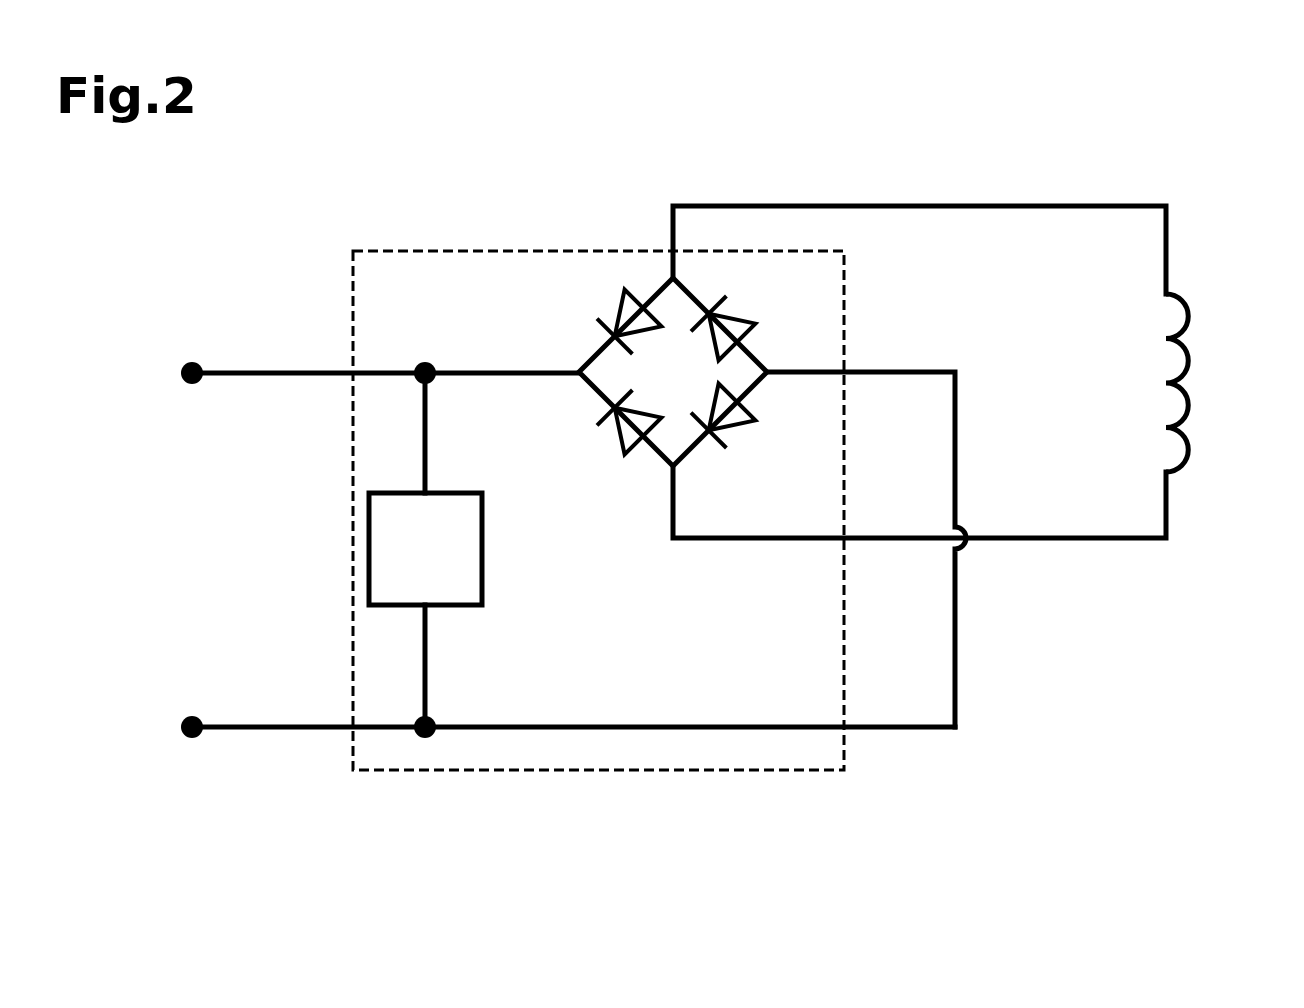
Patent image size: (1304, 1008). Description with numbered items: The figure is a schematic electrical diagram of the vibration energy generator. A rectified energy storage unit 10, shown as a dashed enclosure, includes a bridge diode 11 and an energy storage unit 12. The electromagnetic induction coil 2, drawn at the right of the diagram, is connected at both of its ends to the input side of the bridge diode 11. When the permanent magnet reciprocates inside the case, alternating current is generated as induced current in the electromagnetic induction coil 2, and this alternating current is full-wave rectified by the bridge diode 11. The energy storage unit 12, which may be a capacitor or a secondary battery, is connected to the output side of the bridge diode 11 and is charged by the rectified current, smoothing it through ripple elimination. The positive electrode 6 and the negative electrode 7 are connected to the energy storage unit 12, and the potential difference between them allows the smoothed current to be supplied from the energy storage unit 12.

The electromagnetic induction coil 2 is at (1212, 369).
The positive electrode 6 is at (192, 360).
The negative electrode 7 is at (192, 714).
The rectified energy storage unit 10 is at (554, 772).
The bridge diode 11 is at (609, 460).
The energy storage unit 12 is at (492, 560).